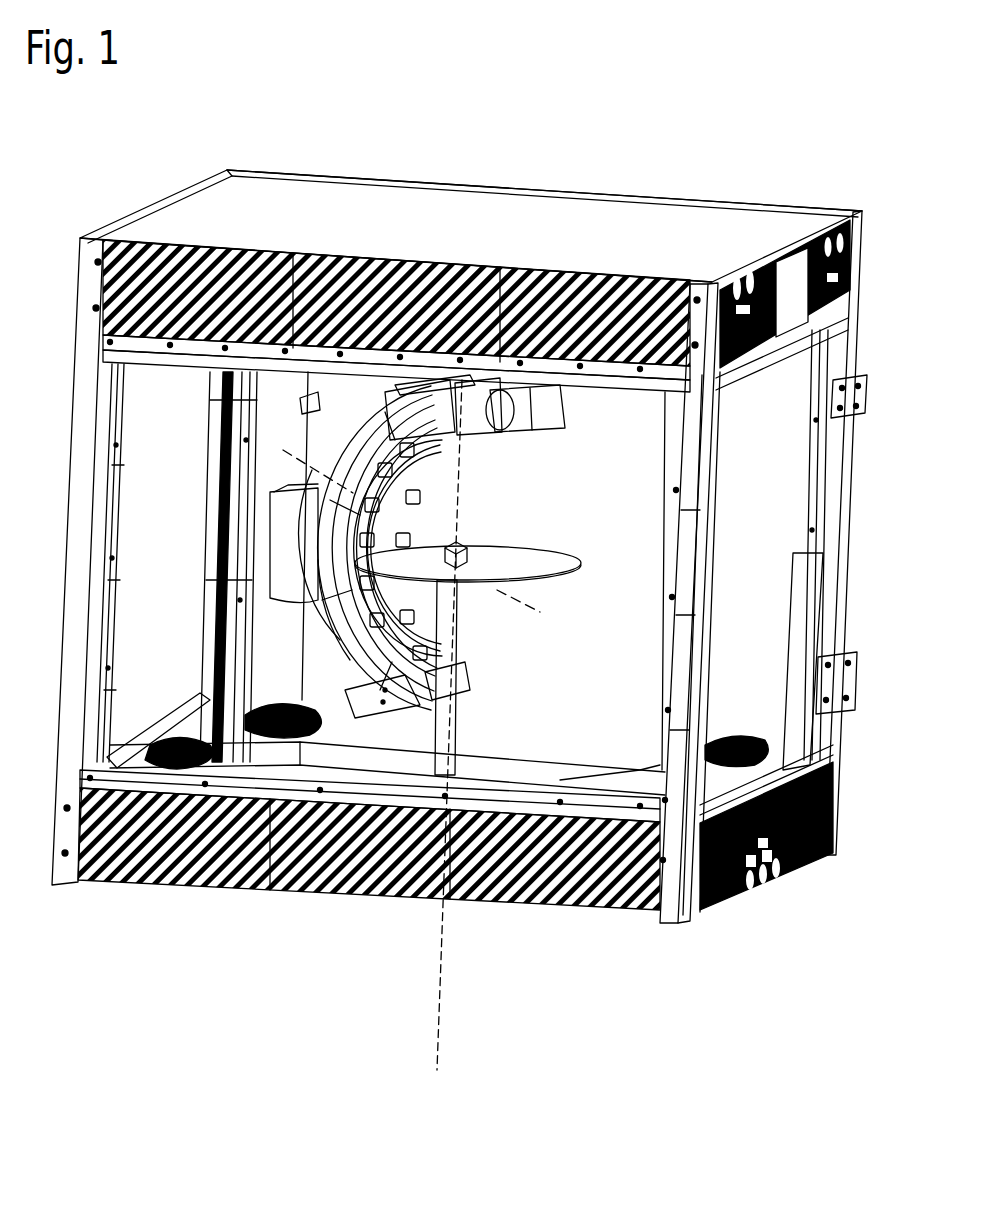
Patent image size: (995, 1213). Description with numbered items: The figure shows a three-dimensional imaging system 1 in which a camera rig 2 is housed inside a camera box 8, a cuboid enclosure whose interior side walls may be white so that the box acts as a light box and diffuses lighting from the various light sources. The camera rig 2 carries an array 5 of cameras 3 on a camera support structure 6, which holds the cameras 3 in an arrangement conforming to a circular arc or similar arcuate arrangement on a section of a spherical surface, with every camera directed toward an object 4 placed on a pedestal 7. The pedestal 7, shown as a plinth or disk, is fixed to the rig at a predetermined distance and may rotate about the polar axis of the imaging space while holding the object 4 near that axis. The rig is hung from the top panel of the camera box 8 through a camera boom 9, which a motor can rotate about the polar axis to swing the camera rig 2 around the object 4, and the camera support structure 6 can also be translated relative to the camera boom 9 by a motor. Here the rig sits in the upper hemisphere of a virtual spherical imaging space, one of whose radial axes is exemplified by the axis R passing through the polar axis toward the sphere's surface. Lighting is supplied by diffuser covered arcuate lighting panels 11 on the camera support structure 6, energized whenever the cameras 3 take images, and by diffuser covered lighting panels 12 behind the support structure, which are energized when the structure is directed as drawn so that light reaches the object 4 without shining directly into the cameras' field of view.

The 3D imaging system 1 is at (790, 170).
The camera rig 2 is at (341, 392).
The cameras 3 is at (420, 497).
The object 4 is at (468, 549).
The array of cameras 5 is at (442, 461).
The camera support structure 6 is at (332, 642).
The pedestal 7 is at (558, 549).
The camera box 8 is at (473, 185).
The camera boom 9 is at (305, 402).
The arcuate lighting panels 11 is at (336, 597).
The lighting panels 12 is at (209, 466).
The radial axis R is at (416, 526).